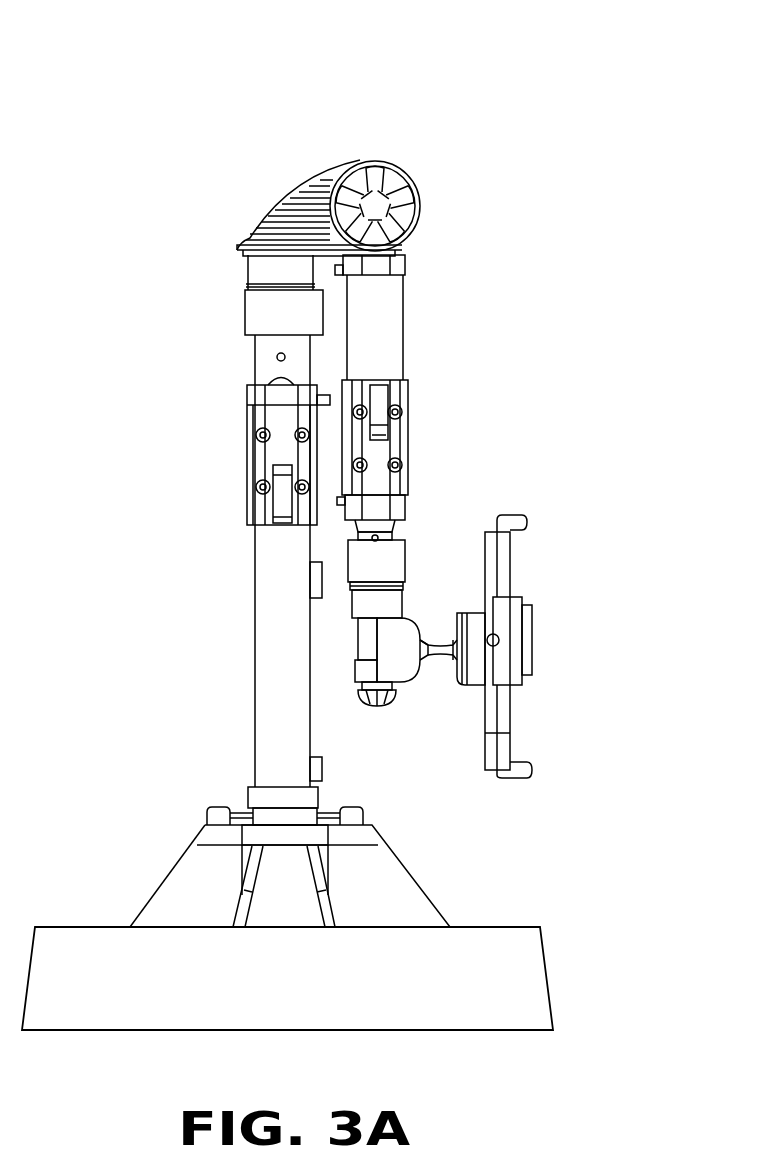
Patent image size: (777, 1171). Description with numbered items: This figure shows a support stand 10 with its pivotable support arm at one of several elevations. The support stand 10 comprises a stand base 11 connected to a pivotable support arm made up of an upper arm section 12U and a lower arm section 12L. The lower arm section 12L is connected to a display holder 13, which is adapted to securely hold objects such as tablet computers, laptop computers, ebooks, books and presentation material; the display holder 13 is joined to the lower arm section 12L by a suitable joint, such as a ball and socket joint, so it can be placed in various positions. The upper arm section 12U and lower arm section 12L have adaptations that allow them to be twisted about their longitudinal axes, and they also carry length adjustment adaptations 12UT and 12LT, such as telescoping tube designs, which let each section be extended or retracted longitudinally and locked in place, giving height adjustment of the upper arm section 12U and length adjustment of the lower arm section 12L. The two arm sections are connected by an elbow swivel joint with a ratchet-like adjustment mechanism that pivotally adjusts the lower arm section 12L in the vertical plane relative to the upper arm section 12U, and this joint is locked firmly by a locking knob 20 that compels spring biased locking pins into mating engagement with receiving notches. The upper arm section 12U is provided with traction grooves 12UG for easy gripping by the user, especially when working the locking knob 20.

The support stand 10 is at (550, 140).
The stand base 11 is at (535, 957).
The upper arm section 12U is at (255, 668).
The traction grooves 12UG is at (280, 215).
The length adjustment adaptation 12UT is at (247, 462).
The lower arm section 12L is at (400, 318).
The length adjustment adaptation 12LT is at (408, 430).
The display holder 13 is at (510, 542).
The locking knob 20 is at (400, 163).